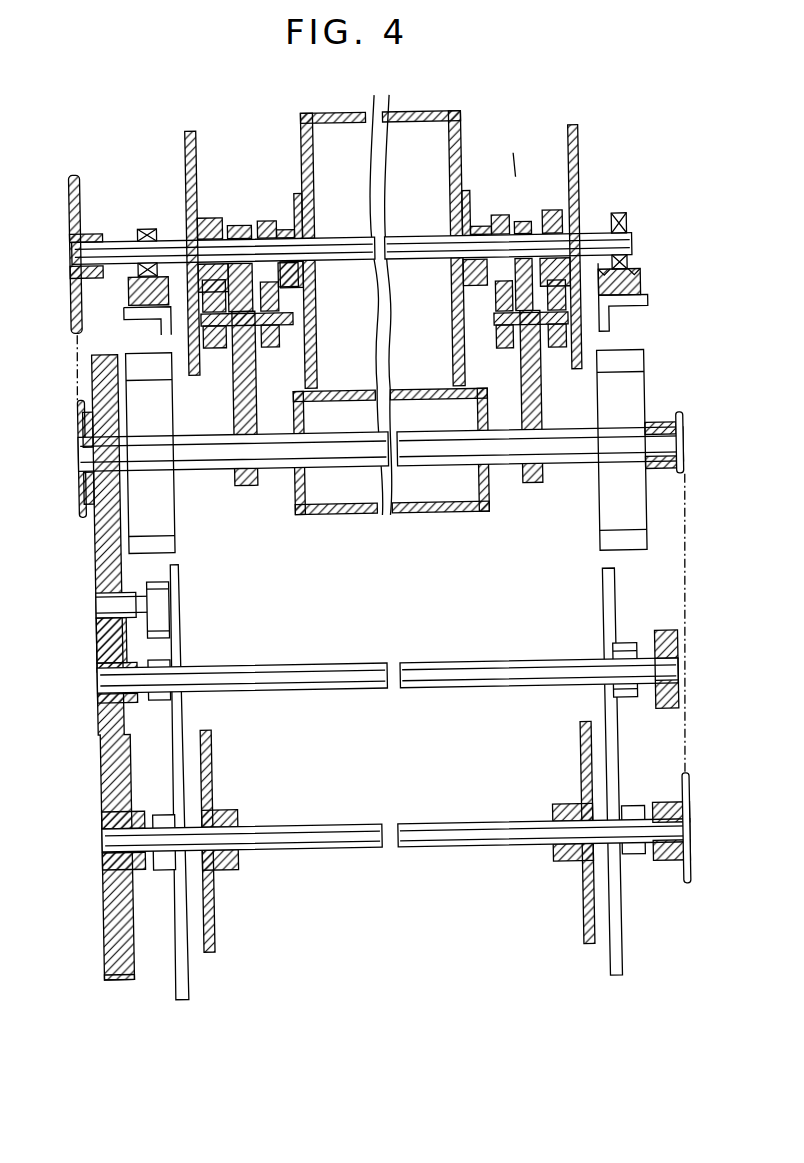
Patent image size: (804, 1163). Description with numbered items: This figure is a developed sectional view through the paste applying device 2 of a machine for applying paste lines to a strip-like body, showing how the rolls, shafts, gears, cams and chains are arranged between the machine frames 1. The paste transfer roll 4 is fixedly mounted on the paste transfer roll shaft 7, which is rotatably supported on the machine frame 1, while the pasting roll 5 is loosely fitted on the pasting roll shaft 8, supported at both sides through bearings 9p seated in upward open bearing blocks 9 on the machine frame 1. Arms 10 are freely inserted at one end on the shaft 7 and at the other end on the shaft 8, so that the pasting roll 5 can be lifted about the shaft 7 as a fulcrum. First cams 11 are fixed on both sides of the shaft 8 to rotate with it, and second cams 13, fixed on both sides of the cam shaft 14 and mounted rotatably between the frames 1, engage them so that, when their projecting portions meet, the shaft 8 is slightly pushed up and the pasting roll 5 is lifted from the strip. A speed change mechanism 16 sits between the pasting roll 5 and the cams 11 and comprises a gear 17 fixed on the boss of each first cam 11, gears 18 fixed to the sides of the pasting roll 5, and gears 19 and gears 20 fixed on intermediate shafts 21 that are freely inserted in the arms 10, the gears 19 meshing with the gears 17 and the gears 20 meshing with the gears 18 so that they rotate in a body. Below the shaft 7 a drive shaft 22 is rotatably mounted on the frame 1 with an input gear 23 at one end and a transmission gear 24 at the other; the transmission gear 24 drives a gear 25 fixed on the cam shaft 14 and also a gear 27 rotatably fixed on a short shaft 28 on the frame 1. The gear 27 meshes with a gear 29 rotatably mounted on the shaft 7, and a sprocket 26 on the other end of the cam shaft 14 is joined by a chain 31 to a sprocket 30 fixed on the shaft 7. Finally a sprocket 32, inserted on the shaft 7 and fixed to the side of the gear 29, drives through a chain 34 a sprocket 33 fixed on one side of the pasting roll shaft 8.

The machine frame 1 is at (126, 318).
The paste applying device 2 is at (396, 110).
The paste transfer roll 4 is at (424, 516).
The pasting roll 5 is at (425, 117).
The paste transfer roll shaft 7 is at (190, 464).
The pasting roll shaft 8 is at (396, 264).
The bearing block 9 is at (643, 292).
The bearing 9p is at (626, 222).
The arm 10 is at (236, 422).
The first cam 11 is at (204, 140).
The second cam 13 is at (208, 926).
The cam shaft 14 is at (322, 852).
The speed change mechanism 16 is at (513, 147).
The gear 17 is at (216, 220).
The gear 18 is at (272, 224).
The gear 19 is at (226, 356).
The gear 20 is at (262, 360).
The intermediate shaft 21 is at (278, 336).
The drive shaft 22 is at (318, 694).
The input gear 23 is at (676, 700).
The transmission gear 24 is at (98, 674).
The gear 25 is at (98, 764).
The sprocket 26 is at (685, 870).
The gear 27 is at (98, 646).
The short shaft 28 is at (106, 610).
The gear 29 is at (104, 550).
The sprocket 30 is at (676, 432).
The chain 31 is at (686, 546).
The sprocket 32 is at (79, 446).
The sprocket 33 is at (87, 210).
The chain 34 is at (76, 368).